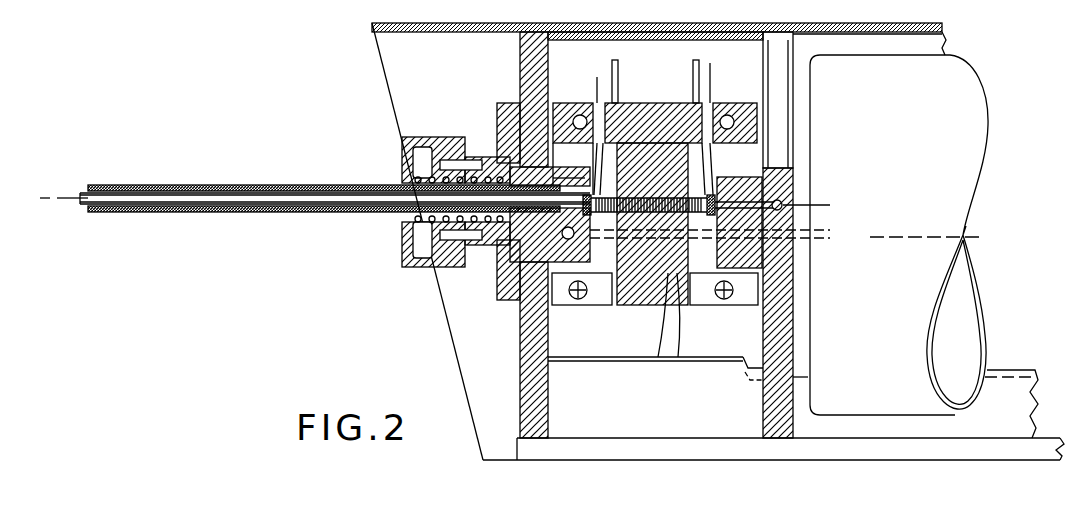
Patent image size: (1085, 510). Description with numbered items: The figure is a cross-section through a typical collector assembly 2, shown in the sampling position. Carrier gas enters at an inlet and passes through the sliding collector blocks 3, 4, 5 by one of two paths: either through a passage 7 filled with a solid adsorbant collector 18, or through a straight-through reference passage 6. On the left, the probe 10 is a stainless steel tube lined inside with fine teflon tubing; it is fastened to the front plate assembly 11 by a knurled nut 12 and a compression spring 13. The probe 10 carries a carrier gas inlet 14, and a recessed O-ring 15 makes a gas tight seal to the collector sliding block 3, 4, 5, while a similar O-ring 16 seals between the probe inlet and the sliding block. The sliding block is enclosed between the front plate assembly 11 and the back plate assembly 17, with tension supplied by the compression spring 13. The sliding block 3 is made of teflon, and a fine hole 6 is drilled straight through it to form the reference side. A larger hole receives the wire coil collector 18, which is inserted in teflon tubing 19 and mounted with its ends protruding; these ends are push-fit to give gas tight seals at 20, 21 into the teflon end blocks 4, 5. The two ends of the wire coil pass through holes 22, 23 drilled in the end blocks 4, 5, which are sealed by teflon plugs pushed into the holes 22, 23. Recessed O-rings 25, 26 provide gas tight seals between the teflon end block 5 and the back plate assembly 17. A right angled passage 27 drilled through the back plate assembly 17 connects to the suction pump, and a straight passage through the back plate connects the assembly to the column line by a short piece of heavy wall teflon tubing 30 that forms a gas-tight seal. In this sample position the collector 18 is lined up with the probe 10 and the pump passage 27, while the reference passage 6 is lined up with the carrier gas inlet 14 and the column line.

The collector assembly 2 is at (630, 370).
The sliding collector block 3 is at (620, 362).
The teflon end block 4 is at (603, 274).
The teflon end block 5 is at (700, 272).
The reference passage 6 is at (678, 358).
The collector passage 7 is at (657, 358).
The probe 10 is at (265, 214).
The front plate assembly 11 is at (506, 305).
The knurled nut 12 is at (432, 266).
The compression spring 13 is at (432, 224).
The carrier gas inlet 14 is at (500, 292).
The recessed O-ring 15 is at (440, 164).
The O-ring 16 is at (500, 125).
The back plate assembly 17 is at (783, 440).
The collector 18 is at (642, 195).
The teflon tubing 19 is at (655, 205).
The gas tight seal 20 is at (557, 153).
The gas tight seal 21 is at (766, 140).
The hole 22 is at (590, 147).
The hole 23 is at (720, 145).
The recessed O-ring 25 is at (792, 181).
The recessed O-ring 26 is at (793, 219).
The right angled passage 27 is at (793, 202).
The heavy wall teflon tubing 30 is at (808, 252).